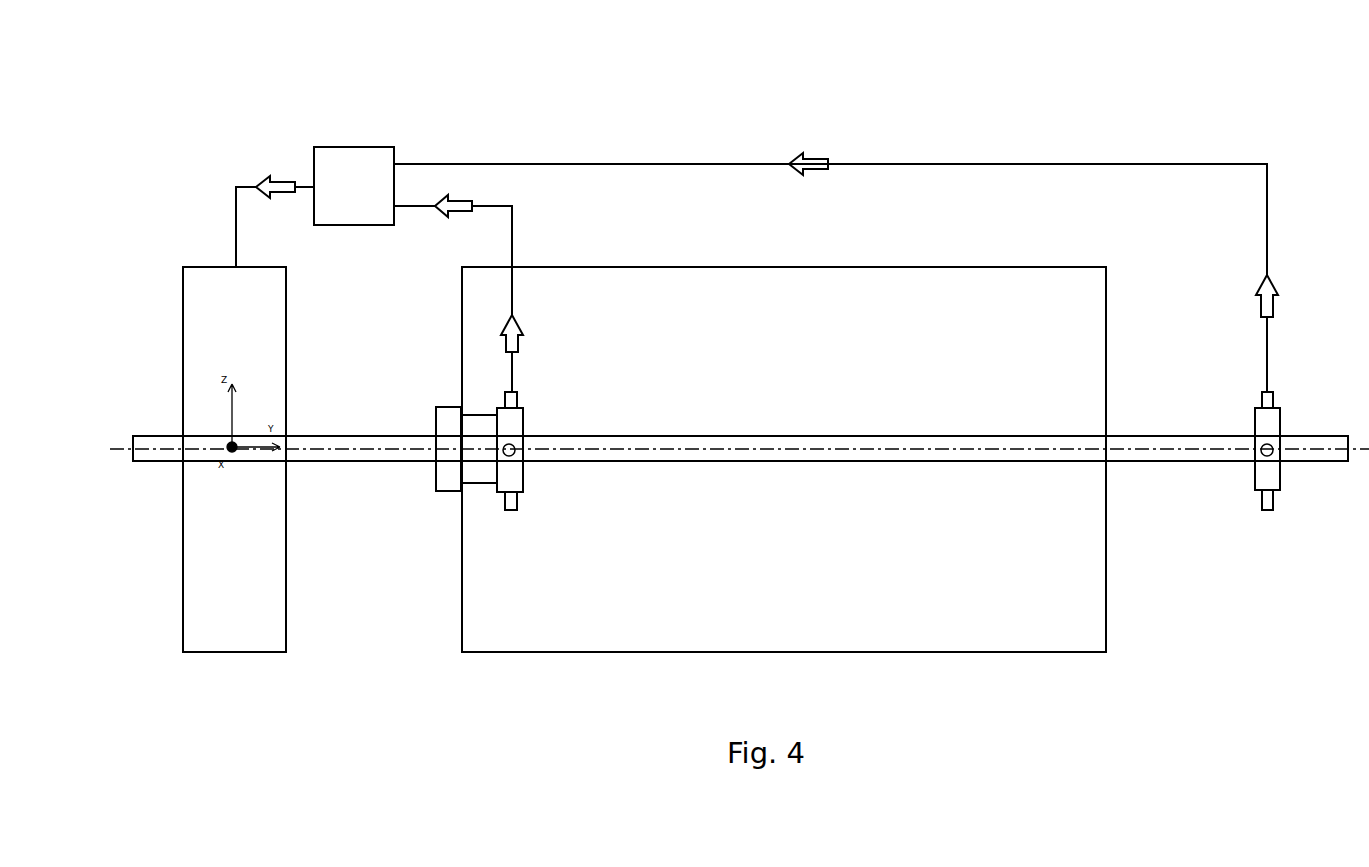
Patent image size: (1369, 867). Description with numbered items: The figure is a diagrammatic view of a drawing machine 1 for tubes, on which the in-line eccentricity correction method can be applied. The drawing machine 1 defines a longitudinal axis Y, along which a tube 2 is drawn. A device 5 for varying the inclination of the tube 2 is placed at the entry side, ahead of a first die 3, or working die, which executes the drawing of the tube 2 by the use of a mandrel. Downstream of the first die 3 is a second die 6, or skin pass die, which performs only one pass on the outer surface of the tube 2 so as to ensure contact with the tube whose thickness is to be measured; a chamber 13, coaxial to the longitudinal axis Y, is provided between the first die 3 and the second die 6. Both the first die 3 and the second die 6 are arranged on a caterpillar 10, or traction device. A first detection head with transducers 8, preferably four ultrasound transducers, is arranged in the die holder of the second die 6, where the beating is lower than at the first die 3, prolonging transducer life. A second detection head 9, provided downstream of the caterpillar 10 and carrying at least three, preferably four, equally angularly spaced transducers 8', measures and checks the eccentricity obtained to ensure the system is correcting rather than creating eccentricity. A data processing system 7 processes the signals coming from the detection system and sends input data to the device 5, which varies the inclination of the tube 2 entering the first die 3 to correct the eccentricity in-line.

The drawing machine 1 is at (1035, 125).
The tube 2 is at (385, 453).
The first die 3 is at (449, 423).
The device for varying the inclination of the tube 5 is at (240, 308).
The second die 6 is at (512, 423).
The data processing system 7 is at (333, 168).
The transducers 8 is at (560, 440).
The transducers 8' is at (1222, 459).
The second detection head 9 is at (1267, 418).
The caterpillar 10 is at (970, 307).
The chamber 13 is at (480, 423).
The longitudinal axis Y is at (323, 448).